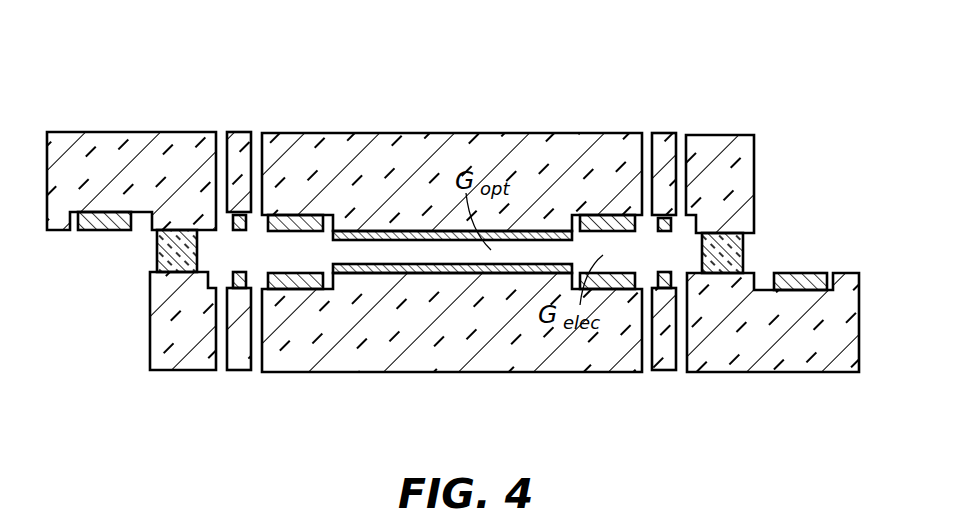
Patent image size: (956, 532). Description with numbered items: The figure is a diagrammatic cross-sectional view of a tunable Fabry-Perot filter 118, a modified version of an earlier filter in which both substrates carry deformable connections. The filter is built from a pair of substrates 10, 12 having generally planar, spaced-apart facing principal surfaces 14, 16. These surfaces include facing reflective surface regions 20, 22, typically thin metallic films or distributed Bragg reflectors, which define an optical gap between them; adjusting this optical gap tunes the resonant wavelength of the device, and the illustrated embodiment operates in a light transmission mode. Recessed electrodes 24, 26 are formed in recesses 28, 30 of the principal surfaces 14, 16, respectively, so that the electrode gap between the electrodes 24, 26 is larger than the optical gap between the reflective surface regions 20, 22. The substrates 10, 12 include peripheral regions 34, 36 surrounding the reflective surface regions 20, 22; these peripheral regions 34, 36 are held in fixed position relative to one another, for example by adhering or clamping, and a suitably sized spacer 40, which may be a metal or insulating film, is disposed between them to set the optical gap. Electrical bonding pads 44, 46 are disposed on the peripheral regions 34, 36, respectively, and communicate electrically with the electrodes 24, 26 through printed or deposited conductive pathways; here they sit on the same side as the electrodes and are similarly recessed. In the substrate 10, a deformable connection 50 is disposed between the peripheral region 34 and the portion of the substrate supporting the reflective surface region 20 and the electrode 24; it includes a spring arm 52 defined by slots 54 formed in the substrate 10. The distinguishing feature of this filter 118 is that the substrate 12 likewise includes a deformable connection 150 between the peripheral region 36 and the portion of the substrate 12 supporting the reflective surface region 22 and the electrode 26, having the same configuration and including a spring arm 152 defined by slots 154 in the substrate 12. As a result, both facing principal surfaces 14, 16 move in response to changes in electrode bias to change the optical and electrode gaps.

The Fabry-Perot filter 118 is at (160, 41).
The peripheral region 34 is at (205, 126).
The electrical bonding pad 44 is at (103, 233).
The spacer 40 is at (160, 266).
The recess 30 is at (262, 272).
The substrate 10 is at (427, 133).
The recessed electrode 24 is at (294, 215).
The principal surface 14 is at (388, 243).
The recess 28 is at (328, 239).
The substrate 12 is at (422, 373).
The principal surface 16 is at (397, 265).
The recessed electrode 26 is at (300, 283).
The reflective surface region 20 is at (547, 231).
The reflective surface region 22 is at (500, 275).
The deformable connection 50 is at (660, 92).
The spring arm 52 is at (666, 140).
The slots 54 is at (648, 130).
The peripheral region 36 is at (855, 378).
The electrical bonding pad 46 is at (803, 273).
The deformable connection 150 is at (662, 398).
The spring arm 152 is at (662, 332).
The slots 154 is at (681, 373).